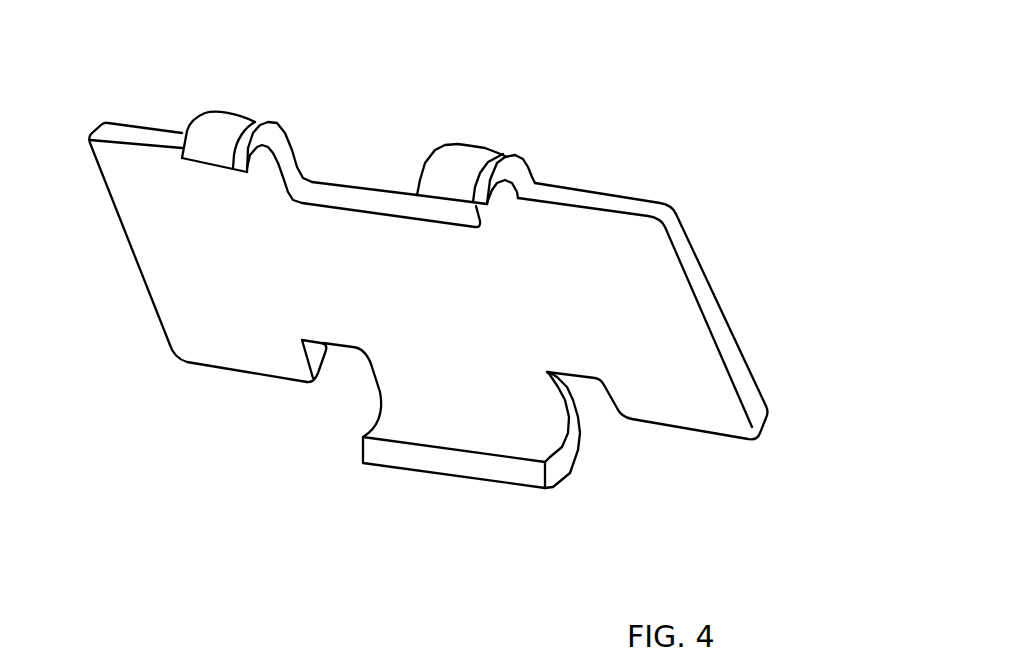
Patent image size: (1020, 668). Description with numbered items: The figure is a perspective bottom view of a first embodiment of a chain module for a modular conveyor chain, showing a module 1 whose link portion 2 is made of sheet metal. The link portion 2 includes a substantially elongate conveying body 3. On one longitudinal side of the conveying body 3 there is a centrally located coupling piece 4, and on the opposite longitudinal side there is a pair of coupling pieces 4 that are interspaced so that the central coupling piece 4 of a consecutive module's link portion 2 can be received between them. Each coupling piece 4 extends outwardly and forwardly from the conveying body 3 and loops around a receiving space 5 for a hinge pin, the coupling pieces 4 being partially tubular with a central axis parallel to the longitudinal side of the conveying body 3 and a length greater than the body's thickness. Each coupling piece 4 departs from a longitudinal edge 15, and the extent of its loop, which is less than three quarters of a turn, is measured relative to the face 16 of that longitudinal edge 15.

The module 1 is at (643, 155).
The link portion 2 is at (638, 485).
The conveying body 3 is at (419, 313).
The coupling piece 4 is at (460, 168).
The receiving space 5 is at (260, 162).
The longitudinal edge 15 is at (383, 187).
The face 16 is at (352, 195).